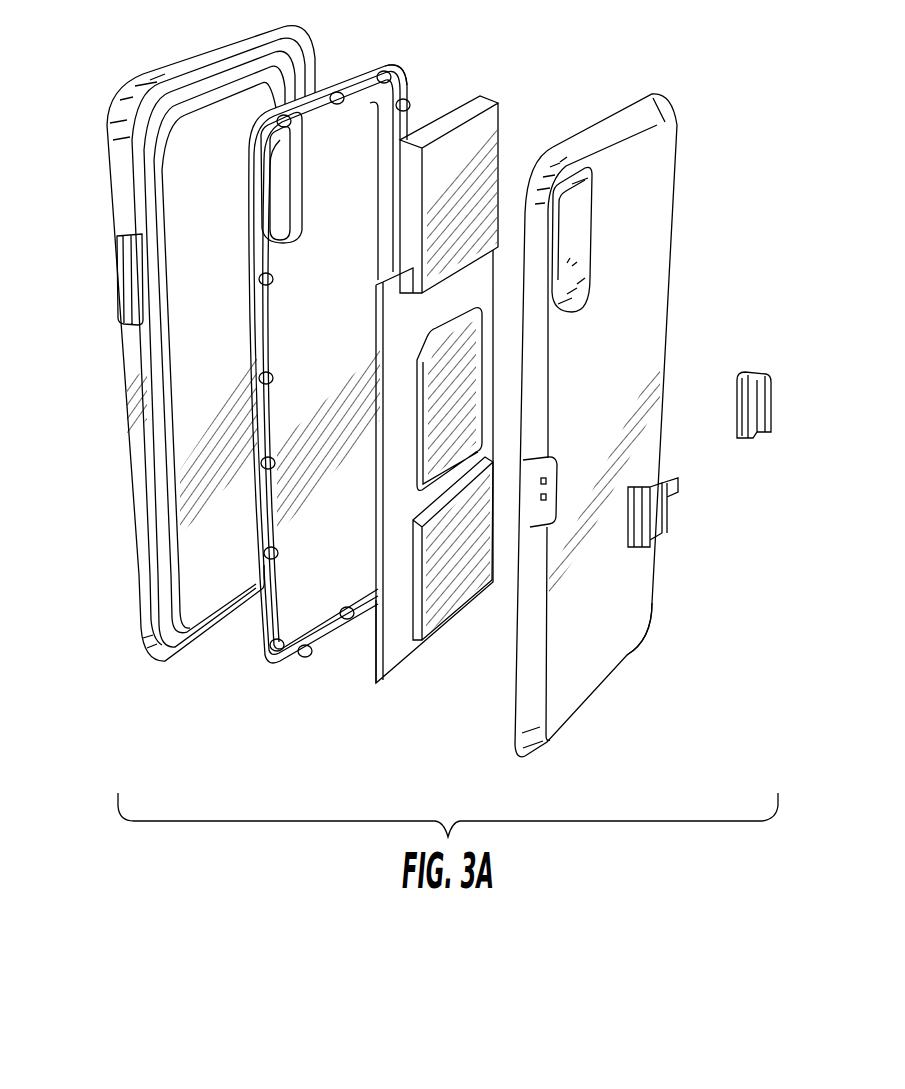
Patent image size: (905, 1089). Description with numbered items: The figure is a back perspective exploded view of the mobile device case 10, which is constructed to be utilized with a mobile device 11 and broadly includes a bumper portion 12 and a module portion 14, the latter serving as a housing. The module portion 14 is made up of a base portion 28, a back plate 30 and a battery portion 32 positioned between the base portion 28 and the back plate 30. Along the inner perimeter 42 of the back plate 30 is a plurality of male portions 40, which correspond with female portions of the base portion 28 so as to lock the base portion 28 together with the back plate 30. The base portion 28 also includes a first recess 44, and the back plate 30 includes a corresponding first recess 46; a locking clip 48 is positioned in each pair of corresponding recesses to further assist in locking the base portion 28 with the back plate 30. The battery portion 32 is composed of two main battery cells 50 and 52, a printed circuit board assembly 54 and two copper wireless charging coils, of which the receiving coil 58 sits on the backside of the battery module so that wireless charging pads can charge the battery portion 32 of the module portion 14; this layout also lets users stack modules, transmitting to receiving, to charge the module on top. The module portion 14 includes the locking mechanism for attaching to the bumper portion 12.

The mobile device case 10 is at (645, 55).
The mobile device 11 is at (222, 117).
The bumper portion 12 is at (127, 107).
The module portion 14 is at (257, 683).
The base portion 28 is at (655, 247).
The back plate 30 is at (364, 80).
The battery portion 32 is at (478, 106).
The male portions 40 is at (336, 92).
The inner perimeter 42 is at (400, 70).
The first recess 44 is at (624, 648).
The first recess 46 is at (290, 422).
The locking clip 48 is at (678, 500).
The main battery cell 50 is at (503, 133).
The main battery cell 52 is at (457, 594).
The PCB assembly 54 is at (376, 616).
The receiving coil 58 is at (463, 397).